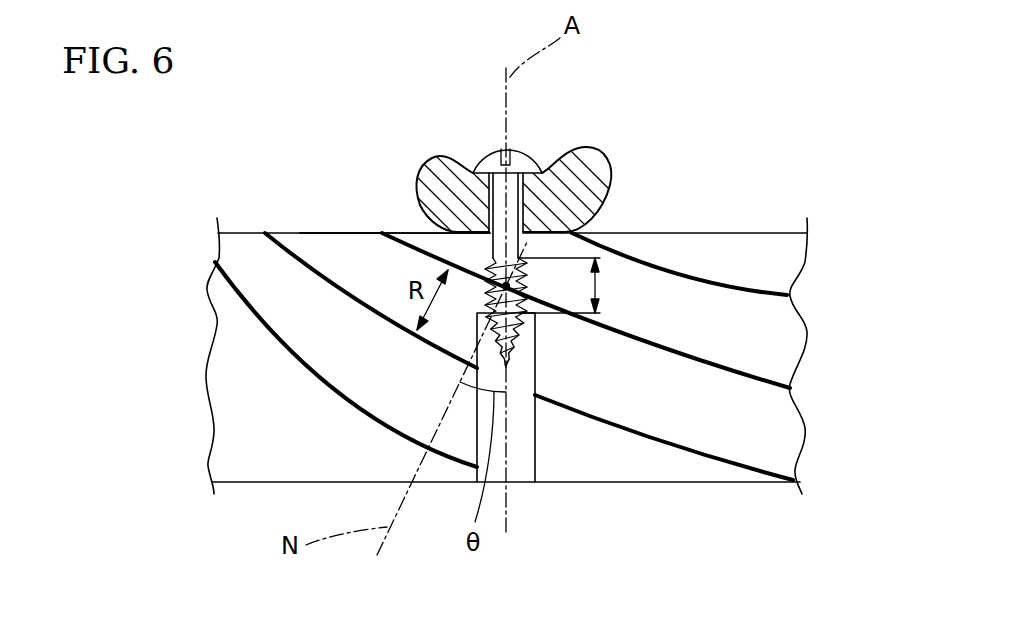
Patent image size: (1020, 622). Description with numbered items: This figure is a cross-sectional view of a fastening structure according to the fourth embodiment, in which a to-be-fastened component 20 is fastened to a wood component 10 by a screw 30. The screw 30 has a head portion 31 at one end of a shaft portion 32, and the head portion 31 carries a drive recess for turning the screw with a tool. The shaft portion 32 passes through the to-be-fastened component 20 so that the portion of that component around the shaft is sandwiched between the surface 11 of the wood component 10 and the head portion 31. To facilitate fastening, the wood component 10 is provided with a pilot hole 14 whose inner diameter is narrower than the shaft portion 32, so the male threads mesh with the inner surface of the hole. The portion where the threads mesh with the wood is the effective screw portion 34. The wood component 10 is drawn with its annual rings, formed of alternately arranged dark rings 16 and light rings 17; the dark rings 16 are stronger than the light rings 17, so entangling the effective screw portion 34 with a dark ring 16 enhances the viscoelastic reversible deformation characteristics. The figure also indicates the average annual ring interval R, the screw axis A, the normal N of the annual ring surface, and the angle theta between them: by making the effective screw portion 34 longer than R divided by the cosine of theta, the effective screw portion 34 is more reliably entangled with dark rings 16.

The wood component 10 is at (745, 243).
The surface 11 is at (672, 233).
The pilot hole 14 is at (535, 457).
The dark ring 16 is at (298, 257).
The light ring 17 is at (335, 233).
The to-be-fastened component 20 is at (594, 152).
The screw 30 is at (457, 191).
The head portion 31 is at (487, 152).
The shaft portion 32 is at (490, 205).
The effective screw portion 34 is at (575, 285).